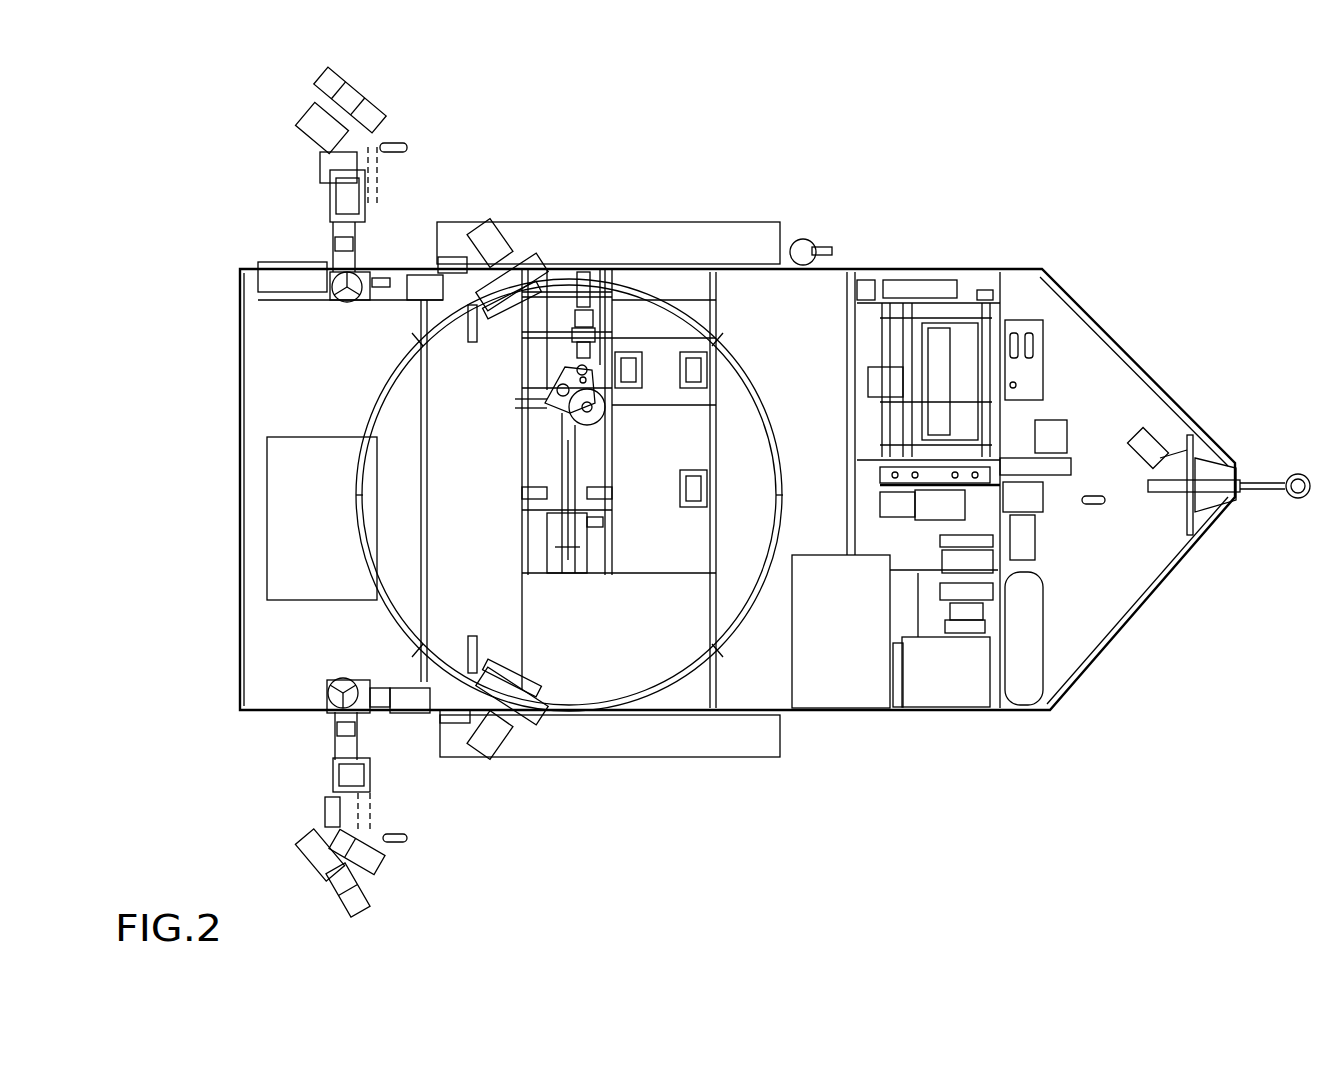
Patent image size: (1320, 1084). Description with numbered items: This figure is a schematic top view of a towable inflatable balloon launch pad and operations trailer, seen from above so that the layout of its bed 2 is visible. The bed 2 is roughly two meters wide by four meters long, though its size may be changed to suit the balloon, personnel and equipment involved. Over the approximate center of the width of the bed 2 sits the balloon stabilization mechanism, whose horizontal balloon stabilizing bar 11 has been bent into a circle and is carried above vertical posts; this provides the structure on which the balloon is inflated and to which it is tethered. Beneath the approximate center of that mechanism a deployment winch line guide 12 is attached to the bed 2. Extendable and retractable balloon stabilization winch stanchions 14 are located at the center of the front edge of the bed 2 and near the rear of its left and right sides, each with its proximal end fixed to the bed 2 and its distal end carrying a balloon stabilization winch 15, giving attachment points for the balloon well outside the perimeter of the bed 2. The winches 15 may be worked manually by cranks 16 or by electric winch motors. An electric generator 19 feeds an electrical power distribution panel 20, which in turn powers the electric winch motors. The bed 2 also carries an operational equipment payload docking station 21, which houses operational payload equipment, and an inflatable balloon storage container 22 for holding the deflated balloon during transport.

The bed 2 is at (843, 268).
The horizontal balloon stabilizing bar 11 is at (762, 392).
The deployment winch line guide 12 is at (553, 417).
The balloon stabilization winch stanchion 14 is at (325, 234).
The balloon stabilization winch 15 is at (372, 93).
The crank 16 is at (417, 152).
The electric generator 19 is at (822, 710).
The electrical power distribution panel 20 is at (948, 710).
The operational equipment payload docking station 21 is at (670, 393).
The inflatable balloon storage container 22 is at (322, 518).